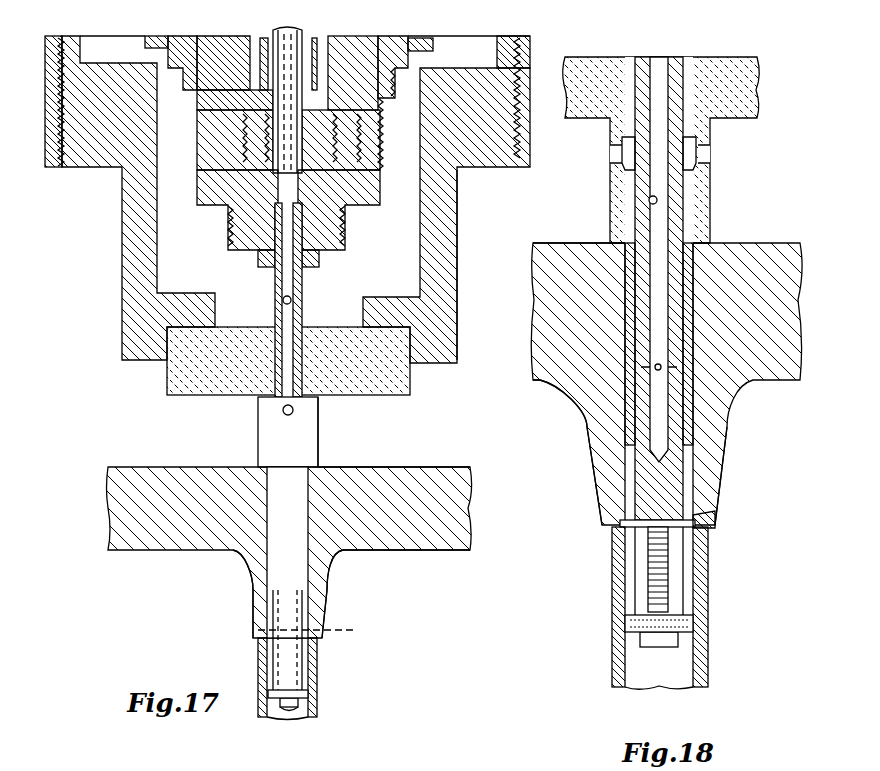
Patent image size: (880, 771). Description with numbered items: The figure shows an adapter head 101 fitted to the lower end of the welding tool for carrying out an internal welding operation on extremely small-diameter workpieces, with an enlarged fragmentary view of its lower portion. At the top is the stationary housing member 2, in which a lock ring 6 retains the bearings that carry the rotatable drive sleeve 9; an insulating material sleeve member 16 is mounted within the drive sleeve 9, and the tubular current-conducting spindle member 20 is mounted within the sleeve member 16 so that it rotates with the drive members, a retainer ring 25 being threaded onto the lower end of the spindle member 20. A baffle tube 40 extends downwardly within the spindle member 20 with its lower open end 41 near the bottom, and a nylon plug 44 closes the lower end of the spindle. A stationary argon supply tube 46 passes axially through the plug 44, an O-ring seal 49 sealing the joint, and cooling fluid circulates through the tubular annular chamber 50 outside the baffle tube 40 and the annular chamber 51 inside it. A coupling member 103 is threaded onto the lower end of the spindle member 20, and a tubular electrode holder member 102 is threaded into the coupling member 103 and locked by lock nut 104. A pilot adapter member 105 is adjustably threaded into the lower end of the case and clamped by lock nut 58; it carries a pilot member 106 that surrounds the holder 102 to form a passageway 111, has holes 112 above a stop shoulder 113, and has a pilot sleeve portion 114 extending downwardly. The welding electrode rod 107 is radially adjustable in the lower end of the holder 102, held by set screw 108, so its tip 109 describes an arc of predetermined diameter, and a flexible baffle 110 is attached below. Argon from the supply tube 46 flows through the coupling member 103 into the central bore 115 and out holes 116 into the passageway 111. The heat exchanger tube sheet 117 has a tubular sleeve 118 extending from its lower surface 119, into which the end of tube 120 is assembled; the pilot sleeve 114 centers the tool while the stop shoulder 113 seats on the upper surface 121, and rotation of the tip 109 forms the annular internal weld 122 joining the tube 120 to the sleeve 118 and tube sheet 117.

In FIG. 17, the housing member 2 is at (532, 66).
In FIG. 17, the lock ring 6 is at (512, 42).
In FIG. 17, the drive sleeve 9 is at (420, 44).
In FIG. 17, the insulating material sleeve member 16 is at (178, 42).
In FIG. 17, the spindle member 20 is at (352, 88).
In FIG. 17, the retainer ring 25 is at (396, 78).
In FIG. 17, the baffle tube 40 is at (243, 43).
In FIG. 17, the lower open end of baffle tube 41 is at (263, 96).
In FIG. 17, the nylon plug 44 is at (320, 137).
In FIG. 17, the argon supply tube 46 is at (287, 100).
In FIG. 17, the O-ring seal 49 is at (270, 139).
In FIG. 17, the tubular annular chamber 50 is at (324, 42).
In FIG. 17, the annular chamber 51 is at (266, 44).
In FIG. 17, the lock nut 58 is at (48, 142).
In FIG. 17, the adapter head 101 is at (476, 230).
In FIG. 17, the electrode holder member 102 is at (303, 300).
In FIG. 18, the electrode holder member 102 is at (676, 62).
In FIG. 17, the coupling member 103 is at (358, 200).
In FIG. 17, the lock nut 104 is at (322, 260).
In FIG. 17, the pilot adapter member 105 is at (447, 284).
In FIG. 17, the pilot member 106 is at (365, 384).
In FIG. 18, the pilot member 106 is at (742, 84).
In FIG. 17, the welding electrode rod 107 is at (323, 628).
In FIG. 18, the welding electrode rod 107 is at (660, 520).
In FIG. 17, the set screw 108 is at (292, 711).
In FIG. 18, the set screw 108 is at (665, 572).
In FIG. 18, the electrode tip 109 is at (630, 519).
In FIG. 17, the flexible baffle 110 is at (304, 695).
In FIG. 18, the flexible baffle 110 is at (680, 629).
In FIG. 18, the passageway 111 is at (688, 212).
In FIG. 17, the holes 112 is at (283, 412).
In FIG. 18, the holes 112 is at (620, 153).
In FIG. 17, the stop shoulder 113 is at (318, 462).
In FIG. 18, the stop shoulder 113 is at (708, 243).
In FIG. 17, the pilot sleeve portion 114 is at (287, 552).
In FIG. 18, the pilot sleeve portion 114 is at (735, 258).
In FIG. 17, the central bore 115 is at (279, 295).
In FIG. 18, the central bore 115 is at (649, 198).
In FIG. 18, the holes 116 is at (640, 368).
In FIG. 17, the tube sheet 117 is at (458, 518).
In FIG. 18, the tube sheet 117 is at (557, 318).
In FIG. 17, the tubular sleeve 118 is at (318, 606).
In FIG. 18, the tubular sleeve 118 is at (598, 442).
In FIG. 17, the lower surface 119 is at (413, 551).
In FIG. 18, the lower surface 119 is at (534, 384).
In FIG. 17, the tube 120 is at (262, 672).
In FIG. 18, the tube 120 is at (616, 668).
In FIG. 17, the upper surface 121 is at (374, 467).
In FIG. 18, the upper surface 121 is at (586, 245).
In FIG. 18, the annular internal weld 122 is at (716, 525).